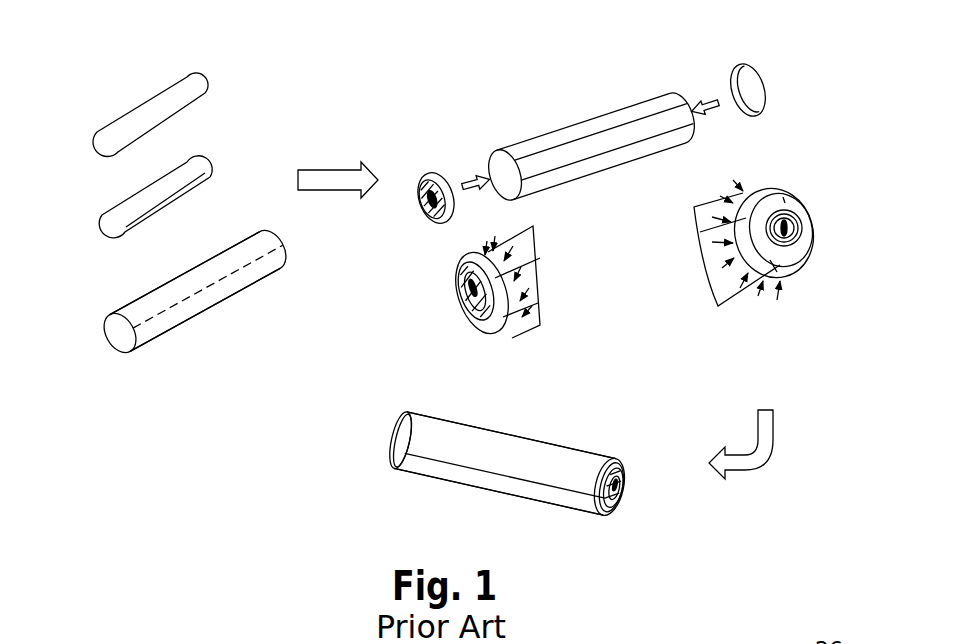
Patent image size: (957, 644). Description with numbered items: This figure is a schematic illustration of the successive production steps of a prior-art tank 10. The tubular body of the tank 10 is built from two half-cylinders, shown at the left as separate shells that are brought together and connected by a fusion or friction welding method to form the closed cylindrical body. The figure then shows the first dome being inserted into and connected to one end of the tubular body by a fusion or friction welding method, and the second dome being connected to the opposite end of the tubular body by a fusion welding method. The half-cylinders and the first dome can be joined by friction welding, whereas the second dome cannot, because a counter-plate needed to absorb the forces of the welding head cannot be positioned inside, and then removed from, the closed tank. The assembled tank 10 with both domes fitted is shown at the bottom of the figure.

The tank 10 is at (563, 431).